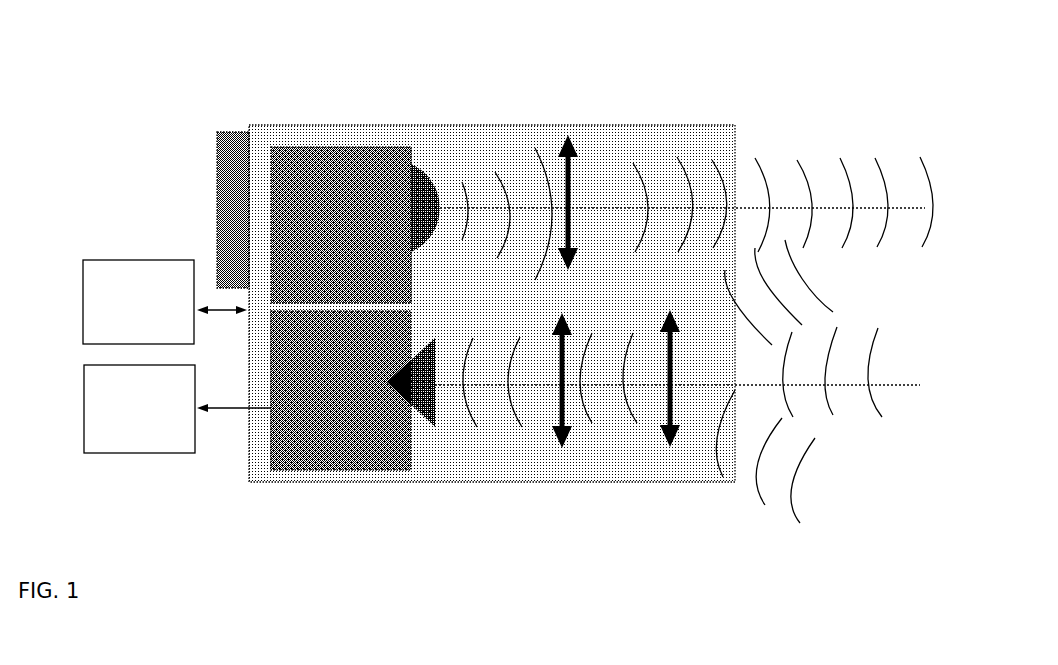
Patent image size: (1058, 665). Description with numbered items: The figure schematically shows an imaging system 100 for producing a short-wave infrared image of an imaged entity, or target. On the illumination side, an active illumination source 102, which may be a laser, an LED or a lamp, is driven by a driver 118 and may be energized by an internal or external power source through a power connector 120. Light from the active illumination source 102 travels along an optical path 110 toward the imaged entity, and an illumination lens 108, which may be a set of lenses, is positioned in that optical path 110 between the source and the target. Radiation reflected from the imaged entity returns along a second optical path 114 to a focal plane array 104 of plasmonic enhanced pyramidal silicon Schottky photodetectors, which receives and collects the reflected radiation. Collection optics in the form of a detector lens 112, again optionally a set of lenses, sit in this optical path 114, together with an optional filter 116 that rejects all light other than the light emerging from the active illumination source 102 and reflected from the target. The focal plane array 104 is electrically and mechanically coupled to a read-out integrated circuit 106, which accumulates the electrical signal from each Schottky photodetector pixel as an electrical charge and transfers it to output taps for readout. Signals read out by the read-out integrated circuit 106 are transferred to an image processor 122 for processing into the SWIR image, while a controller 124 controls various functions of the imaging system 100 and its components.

The imaging system 100 is at (522, 78).
The active illumination source 102 is at (413, 173).
The focal plane array 104 is at (420, 423).
The read-out integrated circuit 106 is at (328, 463).
The illumination lens 108 is at (569, 148).
The optical path 110 is at (640, 160).
The detector lens 112 is at (672, 447).
The optical path 114 is at (807, 382).
The filter 116 is at (572, 447).
The driver 118 is at (328, 165).
The power connector 120 is at (217, 230).
The image processor 122 is at (177, 409).
The controller 124 is at (165, 302).